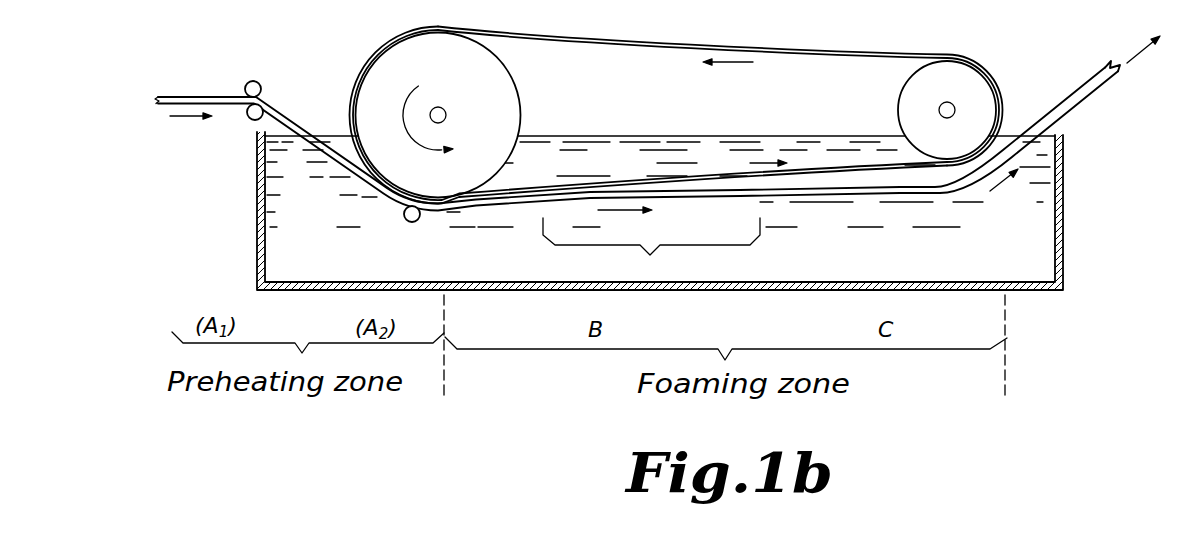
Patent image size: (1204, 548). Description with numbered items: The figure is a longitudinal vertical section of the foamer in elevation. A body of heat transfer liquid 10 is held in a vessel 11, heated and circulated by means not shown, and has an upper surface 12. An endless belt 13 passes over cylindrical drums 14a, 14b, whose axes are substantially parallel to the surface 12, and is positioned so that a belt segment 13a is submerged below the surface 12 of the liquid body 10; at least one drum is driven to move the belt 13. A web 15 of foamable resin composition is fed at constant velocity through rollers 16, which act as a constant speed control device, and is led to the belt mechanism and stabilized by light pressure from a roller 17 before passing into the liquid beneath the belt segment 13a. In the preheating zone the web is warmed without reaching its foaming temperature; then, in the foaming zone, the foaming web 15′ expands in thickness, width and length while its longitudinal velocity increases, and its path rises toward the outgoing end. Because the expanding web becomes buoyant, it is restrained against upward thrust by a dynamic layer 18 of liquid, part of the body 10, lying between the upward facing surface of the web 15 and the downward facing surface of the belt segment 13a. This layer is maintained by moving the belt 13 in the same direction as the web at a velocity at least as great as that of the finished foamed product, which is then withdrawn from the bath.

The body of heat transfer liquid 10 is at (325, 223).
The vessel 11 is at (257, 250).
The upper surface 12 is at (708, 145).
The endless belt 13 is at (827, 49).
The belt segment 13a is at (586, 183).
The cylindrical drum 14a is at (520, 86).
The cylindrical drum 14b is at (897, 101).
The web of foamable resin composition 15 is at (187, 95).
The foaming web 15′ is at (656, 256).
The rollers 16 is at (259, 82).
The roller 17 is at (409, 222).
The dynamic layer of liquid 18 is at (653, 183).